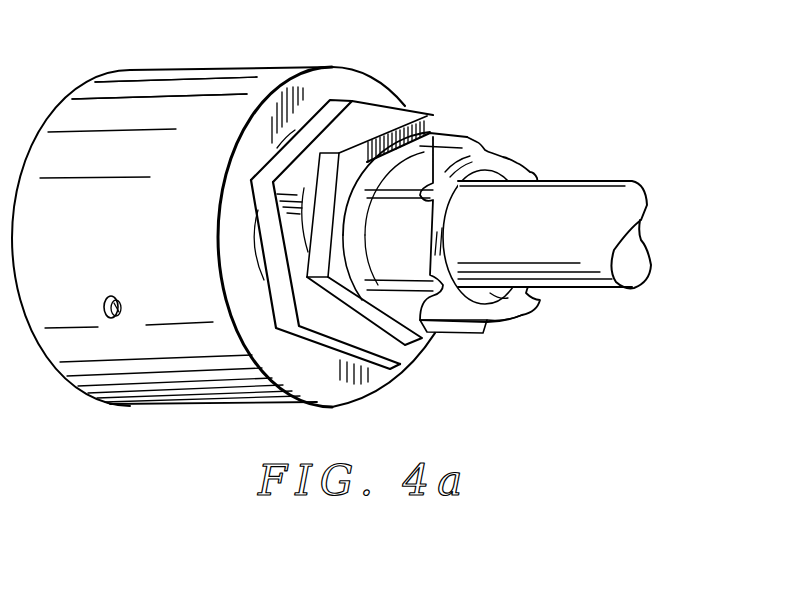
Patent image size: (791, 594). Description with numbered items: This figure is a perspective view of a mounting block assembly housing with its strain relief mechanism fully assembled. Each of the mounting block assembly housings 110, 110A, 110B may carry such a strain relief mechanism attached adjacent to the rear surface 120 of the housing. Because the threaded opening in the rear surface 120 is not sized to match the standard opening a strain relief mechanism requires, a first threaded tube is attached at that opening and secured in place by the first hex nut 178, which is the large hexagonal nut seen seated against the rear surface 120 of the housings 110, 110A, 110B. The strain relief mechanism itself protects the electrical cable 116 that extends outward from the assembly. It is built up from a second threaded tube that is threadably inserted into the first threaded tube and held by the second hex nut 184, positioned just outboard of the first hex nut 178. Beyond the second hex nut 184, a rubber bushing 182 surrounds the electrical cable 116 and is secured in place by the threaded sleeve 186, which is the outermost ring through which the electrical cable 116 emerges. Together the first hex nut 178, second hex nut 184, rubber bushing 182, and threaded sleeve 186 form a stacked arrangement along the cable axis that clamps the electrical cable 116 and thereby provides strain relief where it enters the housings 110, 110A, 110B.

The mounting block assembly housing 110 is at (228, 59).
The mounting block assembly housing 110A is at (240, 41).
The mounting block assembly housing 110B is at (262, 49).
The electrical cable 116 is at (603, 193).
The rear surface 120 is at (400, 100).
The first hex nut 178 is at (367, 110).
The rubber bushing 182 is at (490, 293).
The second hex nut 184 is at (433, 127).
The threaded sleeve 186 is at (500, 160).